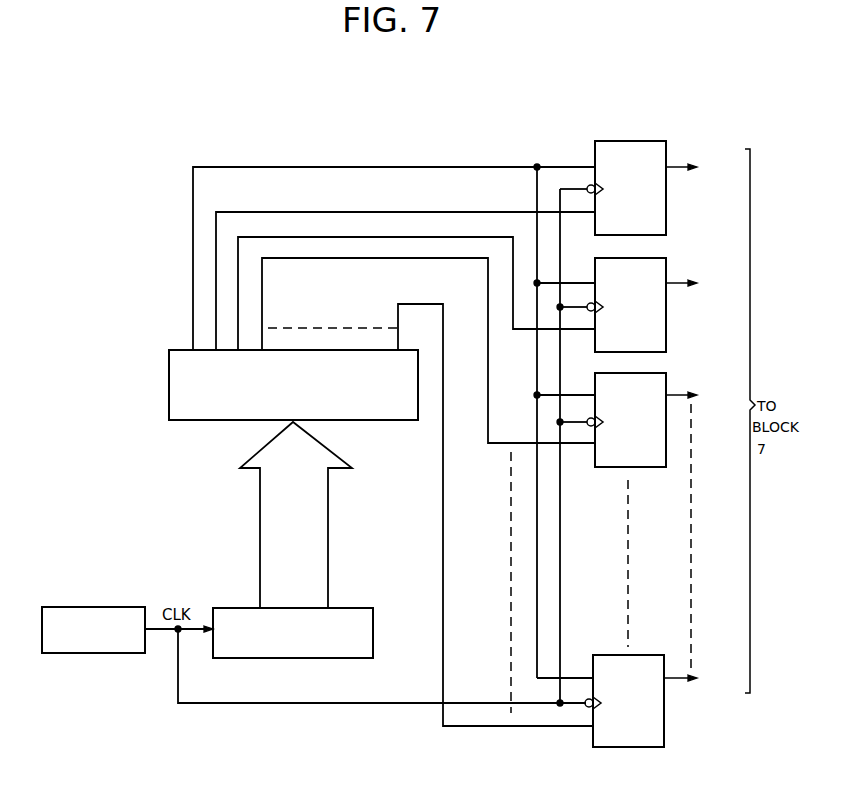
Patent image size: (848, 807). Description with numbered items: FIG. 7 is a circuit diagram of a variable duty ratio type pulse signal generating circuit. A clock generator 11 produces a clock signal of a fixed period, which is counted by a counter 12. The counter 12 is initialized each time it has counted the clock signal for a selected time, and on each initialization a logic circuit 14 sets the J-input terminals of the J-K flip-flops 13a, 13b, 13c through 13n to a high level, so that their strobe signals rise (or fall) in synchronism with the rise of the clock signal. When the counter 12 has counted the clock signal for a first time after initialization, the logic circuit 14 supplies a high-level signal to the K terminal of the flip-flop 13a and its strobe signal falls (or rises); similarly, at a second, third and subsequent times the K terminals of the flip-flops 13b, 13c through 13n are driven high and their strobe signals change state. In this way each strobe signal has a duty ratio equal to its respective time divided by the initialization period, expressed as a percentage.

The clock generator 11 is at (89, 607).
The counter 12 is at (236, 608).
The J-K flip-flop 13a is at (666, 141).
The J-K flip-flop 13b is at (666, 268).
The J-K flip-flop 13c is at (666, 384).
The J-K flip-flop 13n is at (664, 738).
The logic circuit 14 is at (169, 389).